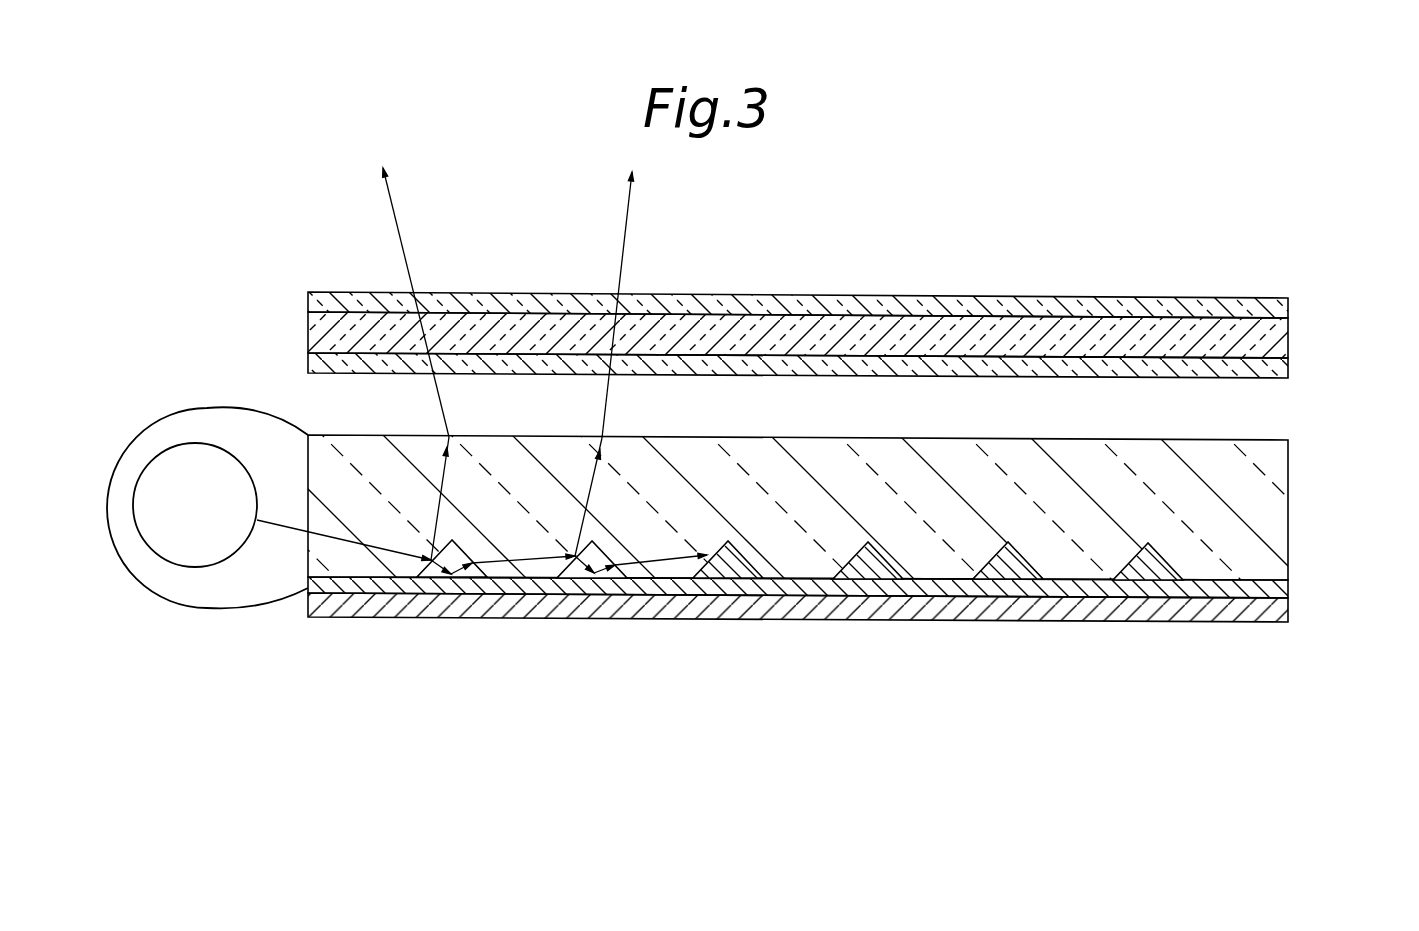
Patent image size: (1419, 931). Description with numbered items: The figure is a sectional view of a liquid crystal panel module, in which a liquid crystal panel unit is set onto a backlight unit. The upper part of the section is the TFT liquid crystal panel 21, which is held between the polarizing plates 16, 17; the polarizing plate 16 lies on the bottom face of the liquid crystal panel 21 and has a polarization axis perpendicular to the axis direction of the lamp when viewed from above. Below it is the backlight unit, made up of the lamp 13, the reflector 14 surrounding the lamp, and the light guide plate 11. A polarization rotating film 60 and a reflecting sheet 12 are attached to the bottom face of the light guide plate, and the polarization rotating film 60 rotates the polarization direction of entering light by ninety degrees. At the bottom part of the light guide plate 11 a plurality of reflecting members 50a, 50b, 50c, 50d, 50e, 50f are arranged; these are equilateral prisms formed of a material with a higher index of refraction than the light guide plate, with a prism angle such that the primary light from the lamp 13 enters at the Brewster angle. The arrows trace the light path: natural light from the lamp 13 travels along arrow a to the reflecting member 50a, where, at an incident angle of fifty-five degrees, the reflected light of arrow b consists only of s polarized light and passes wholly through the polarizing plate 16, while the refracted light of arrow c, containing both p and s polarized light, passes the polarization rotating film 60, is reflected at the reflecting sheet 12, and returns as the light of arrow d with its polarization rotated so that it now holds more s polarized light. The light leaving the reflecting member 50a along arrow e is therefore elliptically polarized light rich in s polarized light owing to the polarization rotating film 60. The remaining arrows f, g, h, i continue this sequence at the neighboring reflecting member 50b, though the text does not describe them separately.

The light guide plate 11 is at (1288, 530).
The reflecting sheet 12 is at (1288, 612).
The lamp 13 is at (225, 557).
The reflector 14 is at (200, 608).
The polarizing plate 16 is at (1288, 372).
The polarizing plate 17 is at (1288, 298).
The TFT liquid crystal panel 21 is at (1288, 338).
The polarization rotating film 60 is at (1288, 590).
The reflecting member 50a is at (482, 573).
The reflecting member 50b is at (638, 578).
The reflecting member 50c is at (742, 578).
The reflecting member 50d is at (876, 575).
The reflecting member 50e is at (1018, 575).
The reflecting member 50f is at (1158, 576).
The arrow indicating light projected from the lamp a is at (344, 539).
The arrow indicating reflected light b is at (427, 364).
The arrow indicating refracted light c is at (445, 575).
The arrow indicating light reflected from the reflecting sheet d is at (470, 566).
The arrow indicating light projected from the reflecting member e is at (523, 540).
The light ray f is at (604, 364).
The light ray g is at (587, 575).
The light ray h is at (613, 568).
The light ray i is at (661, 536).